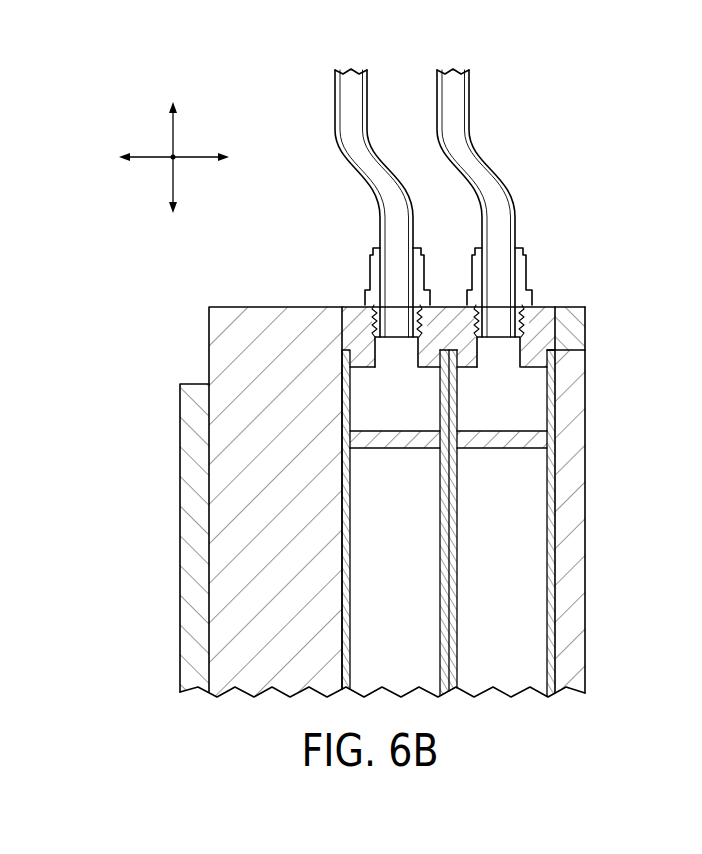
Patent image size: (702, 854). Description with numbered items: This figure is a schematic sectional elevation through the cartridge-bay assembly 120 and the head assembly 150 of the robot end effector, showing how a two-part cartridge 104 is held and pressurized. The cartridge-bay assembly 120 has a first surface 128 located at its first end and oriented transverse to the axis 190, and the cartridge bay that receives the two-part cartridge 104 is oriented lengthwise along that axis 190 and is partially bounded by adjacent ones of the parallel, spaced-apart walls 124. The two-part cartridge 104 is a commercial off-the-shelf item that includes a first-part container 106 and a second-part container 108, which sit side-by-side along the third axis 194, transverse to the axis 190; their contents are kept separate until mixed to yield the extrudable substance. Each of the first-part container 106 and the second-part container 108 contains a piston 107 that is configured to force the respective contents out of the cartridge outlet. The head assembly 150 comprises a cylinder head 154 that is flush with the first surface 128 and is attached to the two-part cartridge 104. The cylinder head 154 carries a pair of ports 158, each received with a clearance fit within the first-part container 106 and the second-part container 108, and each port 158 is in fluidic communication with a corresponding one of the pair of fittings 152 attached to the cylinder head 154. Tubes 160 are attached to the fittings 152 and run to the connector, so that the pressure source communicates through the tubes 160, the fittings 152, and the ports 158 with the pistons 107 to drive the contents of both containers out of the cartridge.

The two-part cartridge 104 is at (549, 567).
The first-part container 106 is at (549, 503).
The piston 107 is at (380, 448).
The second-part container 108 is at (440, 549).
The cartridge-bay assembly 120 is at (111, 366).
The wall 124 is at (237, 697).
The first surface 128 is at (257, 306).
The head assembly 150 is at (632, 257).
The fitting 152 is at (377, 254).
The cylinder head 154 is at (348, 306).
The port 158 is at (366, 368).
The tube 160 is at (476, 153).
The axis 190 is at (171, 126).
The third axis 194 is at (195, 157).